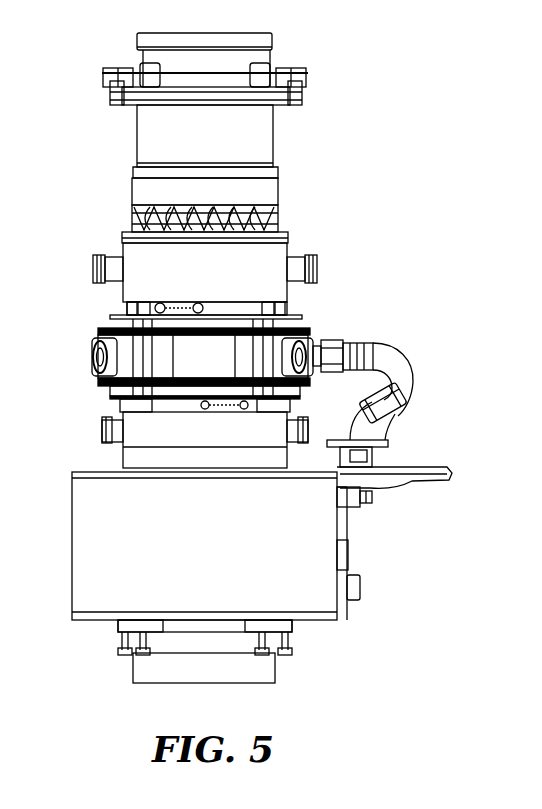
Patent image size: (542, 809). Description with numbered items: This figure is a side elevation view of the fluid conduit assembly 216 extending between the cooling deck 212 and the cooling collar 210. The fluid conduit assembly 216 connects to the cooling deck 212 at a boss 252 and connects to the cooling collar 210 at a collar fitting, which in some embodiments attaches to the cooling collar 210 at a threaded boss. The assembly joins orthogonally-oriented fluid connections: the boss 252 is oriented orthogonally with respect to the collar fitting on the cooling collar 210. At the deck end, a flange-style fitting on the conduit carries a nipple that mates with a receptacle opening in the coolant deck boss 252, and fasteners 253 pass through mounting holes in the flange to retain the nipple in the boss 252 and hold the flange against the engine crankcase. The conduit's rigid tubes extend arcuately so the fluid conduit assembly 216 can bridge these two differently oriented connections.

The cooling collar 210 is at (92, 338).
The fluid conduit assembly 216 is at (385, 358).
The fasteners 253 is at (358, 437).
The boss 252 is at (370, 455).
The cooling deck 212 is at (450, 478).